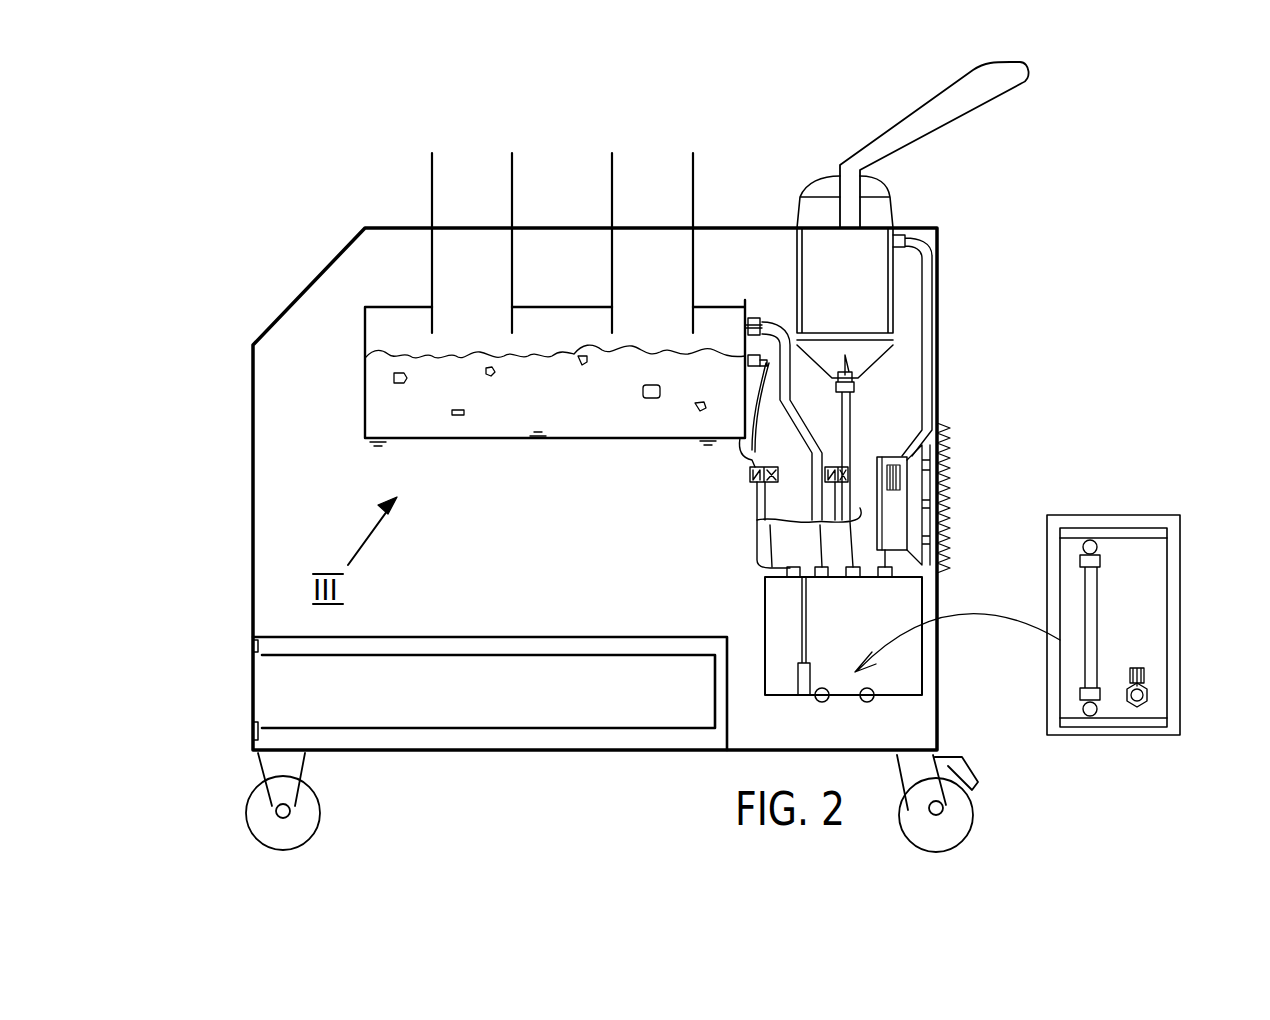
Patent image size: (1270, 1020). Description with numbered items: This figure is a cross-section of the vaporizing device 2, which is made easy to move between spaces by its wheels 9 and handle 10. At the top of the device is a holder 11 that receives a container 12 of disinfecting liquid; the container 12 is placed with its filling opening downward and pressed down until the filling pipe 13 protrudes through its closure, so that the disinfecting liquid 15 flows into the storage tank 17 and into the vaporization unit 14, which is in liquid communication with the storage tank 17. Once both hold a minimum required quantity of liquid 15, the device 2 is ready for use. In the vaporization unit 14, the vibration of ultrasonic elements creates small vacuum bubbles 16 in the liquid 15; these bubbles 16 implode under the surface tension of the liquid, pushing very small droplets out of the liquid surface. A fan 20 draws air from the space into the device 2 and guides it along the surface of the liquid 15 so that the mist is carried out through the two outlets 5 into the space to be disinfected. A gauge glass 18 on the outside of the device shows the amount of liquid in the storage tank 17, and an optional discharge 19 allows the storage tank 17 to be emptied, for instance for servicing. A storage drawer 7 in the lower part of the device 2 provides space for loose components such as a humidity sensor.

The vaporizing device 2 is at (248, 222).
The outlets 5 is at (478, 165).
The storage drawer 7 is at (408, 695).
The wheels 9 is at (300, 815).
The handle 10 is at (948, 100).
The holder 11 is at (897, 352).
The container 12 is at (880, 270).
The filling pipe 13 is at (852, 380).
The vaporization unit 14 is at (353, 407).
The disinfecting liquid 15 is at (497, 413).
The vacuum bubbles 16 is at (650, 398).
The storage tank 17 is at (900, 665).
The gauge glass 18 is at (1092, 588).
The discharge 19 is at (1148, 693).
The fan 20 is at (920, 483).